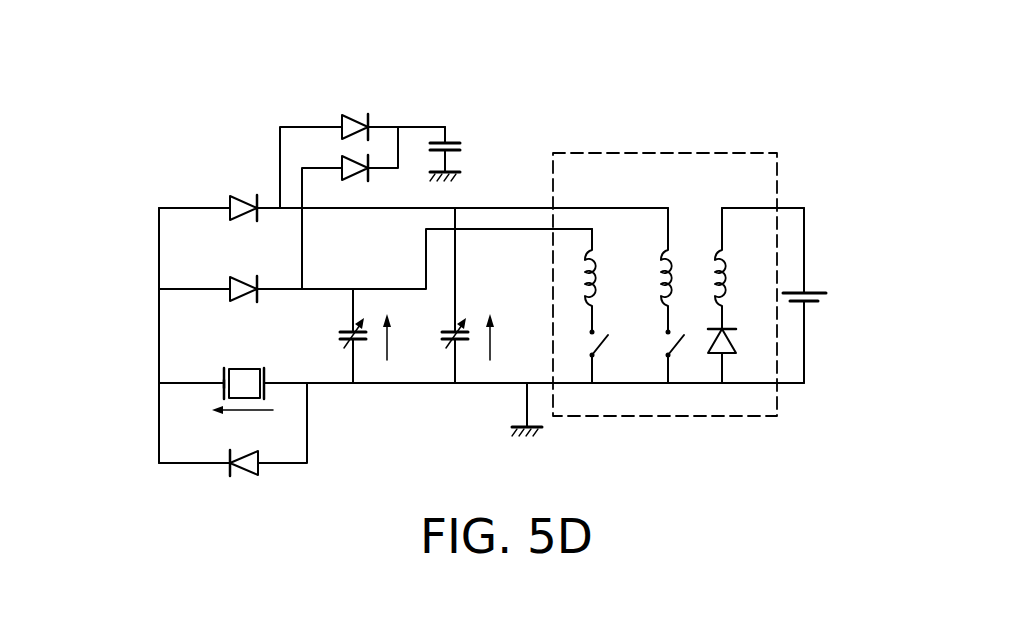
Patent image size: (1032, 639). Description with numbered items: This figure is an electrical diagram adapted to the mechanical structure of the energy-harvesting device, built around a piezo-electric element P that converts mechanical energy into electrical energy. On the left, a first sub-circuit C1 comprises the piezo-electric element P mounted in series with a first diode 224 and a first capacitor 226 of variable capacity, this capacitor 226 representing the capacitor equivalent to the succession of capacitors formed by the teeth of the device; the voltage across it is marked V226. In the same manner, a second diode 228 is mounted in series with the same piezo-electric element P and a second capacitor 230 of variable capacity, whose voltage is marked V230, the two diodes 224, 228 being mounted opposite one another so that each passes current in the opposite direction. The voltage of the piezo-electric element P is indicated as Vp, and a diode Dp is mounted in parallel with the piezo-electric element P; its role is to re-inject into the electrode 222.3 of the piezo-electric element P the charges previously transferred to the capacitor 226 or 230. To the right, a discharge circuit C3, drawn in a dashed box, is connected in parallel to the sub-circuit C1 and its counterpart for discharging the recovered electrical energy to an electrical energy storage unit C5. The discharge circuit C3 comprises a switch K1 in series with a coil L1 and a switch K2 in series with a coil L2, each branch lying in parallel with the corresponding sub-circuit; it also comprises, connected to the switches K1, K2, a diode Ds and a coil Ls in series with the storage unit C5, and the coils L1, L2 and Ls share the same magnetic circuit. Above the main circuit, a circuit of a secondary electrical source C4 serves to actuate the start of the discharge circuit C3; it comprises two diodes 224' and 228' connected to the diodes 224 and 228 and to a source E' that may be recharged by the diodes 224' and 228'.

The first sub-circuit C1 is at (150, 312).
The second diode 228 is at (226, 178).
The first diode 224 is at (265, 261).
The circuit of a secondary electrical source C4 is at (420, 103).
The diode 228' is at (336, 98).
The diode 224' is at (383, 199).
The source E' is at (480, 146).
The first capacitor 226 is at (364, 342).
The voltage across capacitor 226 V226 is at (410, 337).
The second capacitor 230 is at (466, 342).
The voltage across capacitor 230 V230 is at (513, 337).
The piezo-electric element P is at (243, 372).
The electrode 222.3 is at (223, 386).
The piezoelectric voltage Vp is at (242, 423).
The diode Dp is at (250, 467).
The discharge circuit C3 is at (701, 150).
The coil L1 is at (576, 279).
The switch K1 is at (584, 356).
The coil L2 is at (653, 269).
The switch K2 is at (660, 356).
The coil Ls is at (759, 268).
The diode Ds is at (738, 356).
The electrical energy storage unit C5 is at (823, 300).